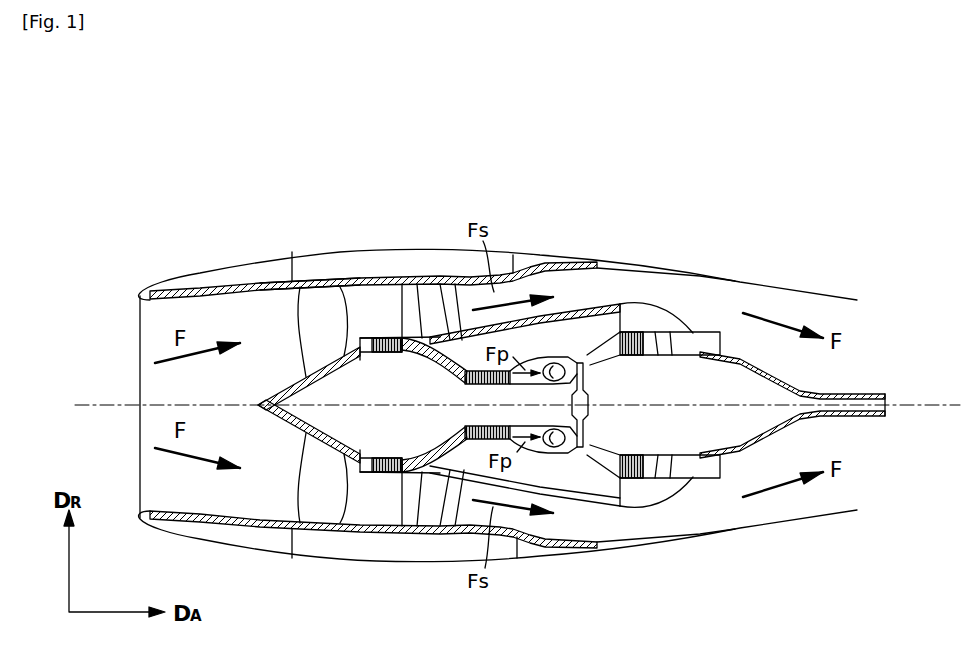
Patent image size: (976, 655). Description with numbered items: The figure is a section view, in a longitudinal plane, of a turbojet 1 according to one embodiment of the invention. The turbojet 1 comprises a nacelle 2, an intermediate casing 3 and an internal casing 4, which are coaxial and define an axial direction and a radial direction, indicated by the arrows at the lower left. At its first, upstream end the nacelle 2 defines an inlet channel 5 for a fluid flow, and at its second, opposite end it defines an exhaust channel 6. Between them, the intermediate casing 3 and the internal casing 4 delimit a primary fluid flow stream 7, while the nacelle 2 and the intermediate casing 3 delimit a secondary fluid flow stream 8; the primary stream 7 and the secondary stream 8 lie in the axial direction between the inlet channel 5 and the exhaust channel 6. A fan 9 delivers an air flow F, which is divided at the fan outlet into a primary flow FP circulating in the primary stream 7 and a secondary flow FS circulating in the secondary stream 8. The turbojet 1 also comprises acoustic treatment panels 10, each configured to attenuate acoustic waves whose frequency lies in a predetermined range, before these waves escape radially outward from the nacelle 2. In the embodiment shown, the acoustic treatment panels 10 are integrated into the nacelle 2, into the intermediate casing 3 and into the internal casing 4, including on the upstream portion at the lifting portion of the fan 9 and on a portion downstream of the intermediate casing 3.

The turbojet 1 is at (673, 162).
The nacelle 2 is at (673, 262).
The intermediate casing 3 is at (568, 302).
The internal casing 4 is at (275, 378).
The inlet channel 5 is at (153, 320).
The exhaust channel 6 is at (868, 350).
The primary fluid flow stream 7 is at (446, 298).
The secondary fluid flow stream 8 is at (513, 295).
The fan 9 is at (333, 500).
The acoustic treatment panels 10 is at (302, 330).